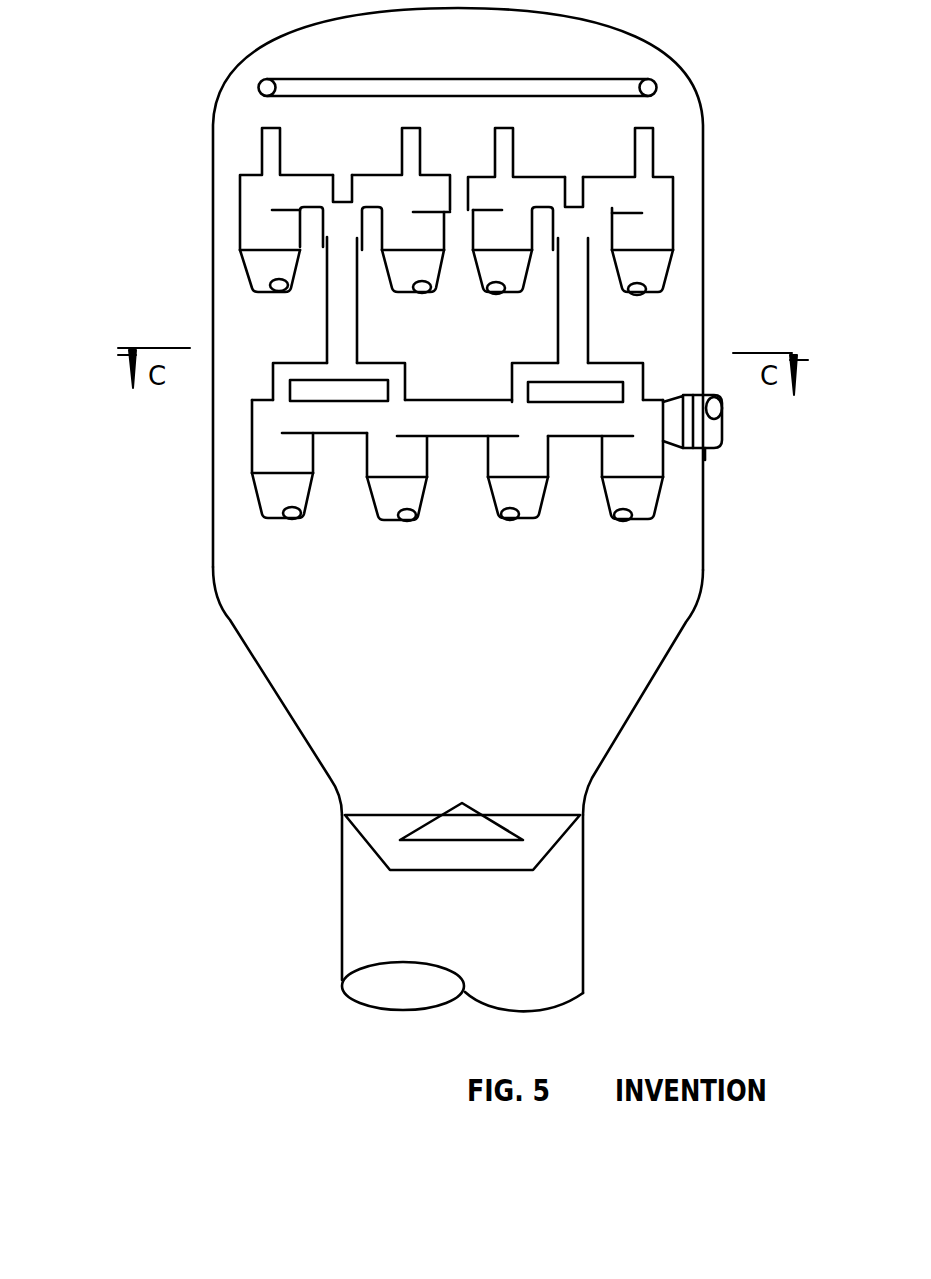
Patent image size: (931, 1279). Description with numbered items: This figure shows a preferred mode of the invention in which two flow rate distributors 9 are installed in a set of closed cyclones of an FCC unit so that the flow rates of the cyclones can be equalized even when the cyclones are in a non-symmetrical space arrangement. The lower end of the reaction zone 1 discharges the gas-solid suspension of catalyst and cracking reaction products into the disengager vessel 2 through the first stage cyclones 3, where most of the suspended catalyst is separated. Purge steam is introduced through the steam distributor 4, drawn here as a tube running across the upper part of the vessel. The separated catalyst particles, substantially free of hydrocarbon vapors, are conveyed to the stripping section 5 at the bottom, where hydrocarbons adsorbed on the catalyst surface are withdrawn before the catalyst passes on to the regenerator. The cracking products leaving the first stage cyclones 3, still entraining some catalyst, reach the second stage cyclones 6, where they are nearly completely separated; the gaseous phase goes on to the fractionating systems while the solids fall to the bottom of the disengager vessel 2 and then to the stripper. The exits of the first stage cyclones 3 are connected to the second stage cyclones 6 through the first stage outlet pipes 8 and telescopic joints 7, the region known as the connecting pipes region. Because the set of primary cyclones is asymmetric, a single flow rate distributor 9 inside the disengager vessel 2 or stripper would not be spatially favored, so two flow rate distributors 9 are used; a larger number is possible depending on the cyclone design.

The reaction zone 1 is at (727, 433).
The disengager vessel 2 is at (705, 527).
The first stage cyclones 3 is at (388, 519).
The steam distributor 4 is at (655, 86).
The stripping section 5 is at (585, 912).
The second stage cyclones 6 is at (393, 292).
The telescopic joints 7 is at (595, 247).
The first stage outlet pipes 8 is at (325, 335).
The flow rate distributor 9 is at (333, 191).